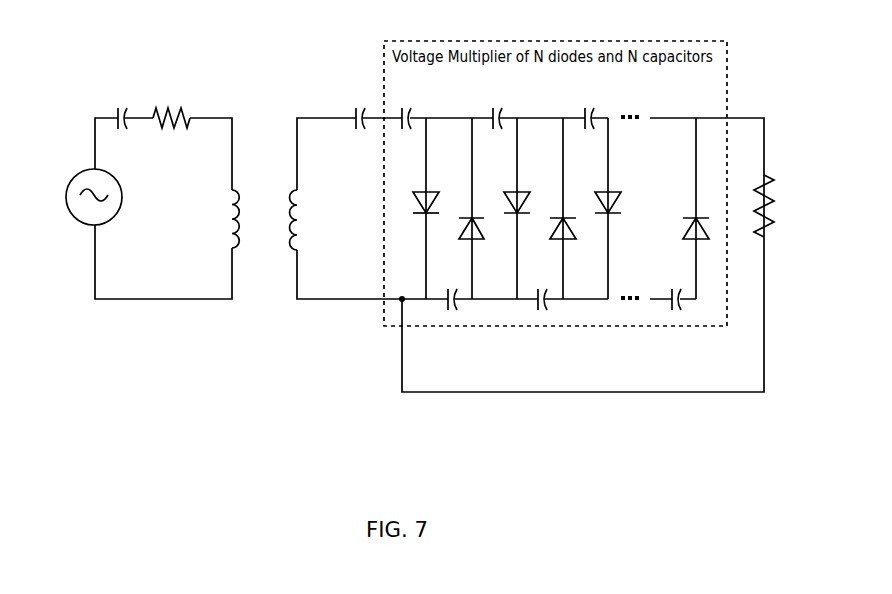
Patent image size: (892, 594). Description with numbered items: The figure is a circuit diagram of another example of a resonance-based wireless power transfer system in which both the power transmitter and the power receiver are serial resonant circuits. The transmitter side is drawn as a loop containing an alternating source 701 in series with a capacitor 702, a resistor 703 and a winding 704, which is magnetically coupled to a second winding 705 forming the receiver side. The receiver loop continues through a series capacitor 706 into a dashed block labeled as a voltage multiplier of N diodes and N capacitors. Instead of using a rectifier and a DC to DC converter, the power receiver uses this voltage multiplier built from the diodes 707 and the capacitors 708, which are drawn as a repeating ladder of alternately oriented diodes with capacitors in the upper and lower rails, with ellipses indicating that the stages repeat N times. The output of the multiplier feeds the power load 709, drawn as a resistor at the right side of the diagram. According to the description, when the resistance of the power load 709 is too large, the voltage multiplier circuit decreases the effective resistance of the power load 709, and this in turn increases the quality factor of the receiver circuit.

The AC voltage source 701 is at (94, 197).
The capacitor 702 is at (115, 128).
The resistor 703 is at (171, 128).
The transformer primary winding 704 is at (222, 219).
The transformer secondary winding 705 is at (306, 220).
The capacitor 706 is at (350, 128).
The diodes 707 is at (416, 208).
The capacitors 708 is at (397, 128).
The power load 709 is at (781, 206).